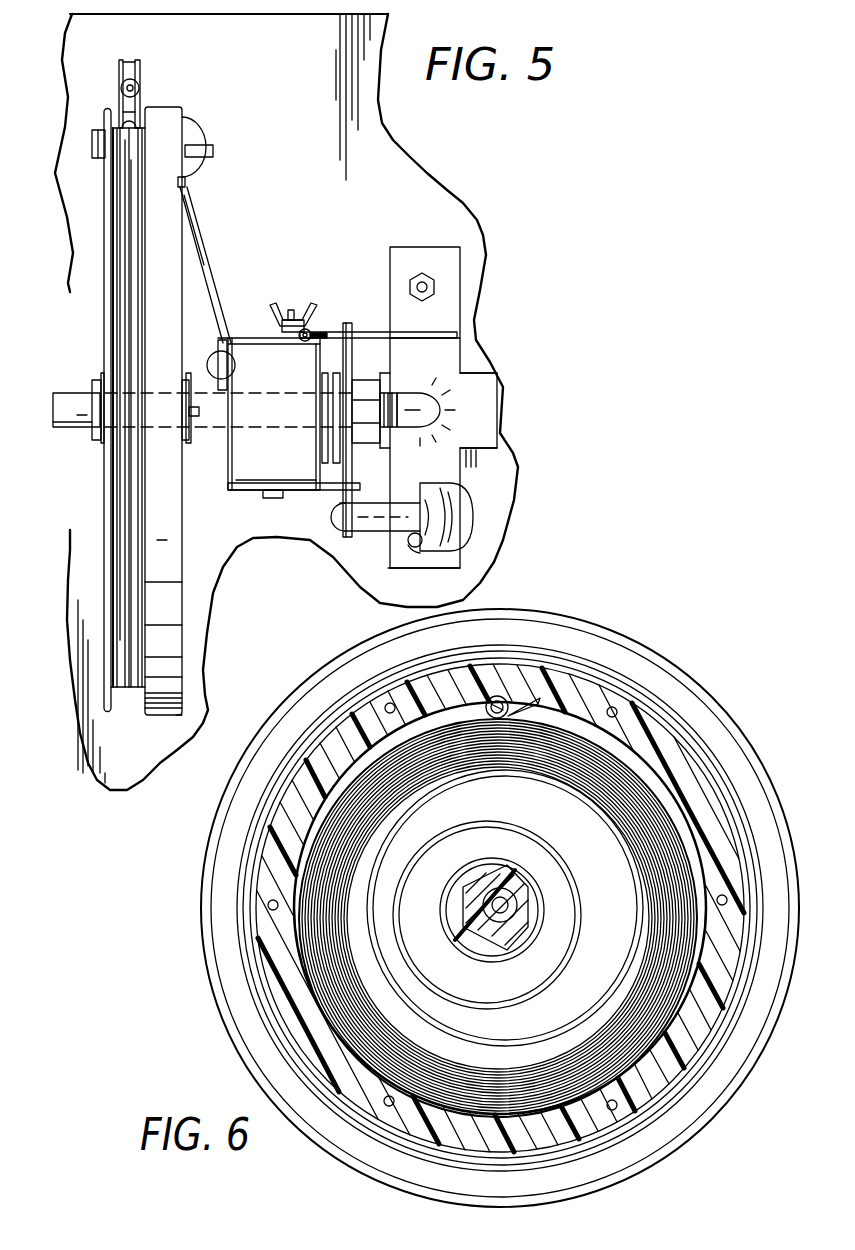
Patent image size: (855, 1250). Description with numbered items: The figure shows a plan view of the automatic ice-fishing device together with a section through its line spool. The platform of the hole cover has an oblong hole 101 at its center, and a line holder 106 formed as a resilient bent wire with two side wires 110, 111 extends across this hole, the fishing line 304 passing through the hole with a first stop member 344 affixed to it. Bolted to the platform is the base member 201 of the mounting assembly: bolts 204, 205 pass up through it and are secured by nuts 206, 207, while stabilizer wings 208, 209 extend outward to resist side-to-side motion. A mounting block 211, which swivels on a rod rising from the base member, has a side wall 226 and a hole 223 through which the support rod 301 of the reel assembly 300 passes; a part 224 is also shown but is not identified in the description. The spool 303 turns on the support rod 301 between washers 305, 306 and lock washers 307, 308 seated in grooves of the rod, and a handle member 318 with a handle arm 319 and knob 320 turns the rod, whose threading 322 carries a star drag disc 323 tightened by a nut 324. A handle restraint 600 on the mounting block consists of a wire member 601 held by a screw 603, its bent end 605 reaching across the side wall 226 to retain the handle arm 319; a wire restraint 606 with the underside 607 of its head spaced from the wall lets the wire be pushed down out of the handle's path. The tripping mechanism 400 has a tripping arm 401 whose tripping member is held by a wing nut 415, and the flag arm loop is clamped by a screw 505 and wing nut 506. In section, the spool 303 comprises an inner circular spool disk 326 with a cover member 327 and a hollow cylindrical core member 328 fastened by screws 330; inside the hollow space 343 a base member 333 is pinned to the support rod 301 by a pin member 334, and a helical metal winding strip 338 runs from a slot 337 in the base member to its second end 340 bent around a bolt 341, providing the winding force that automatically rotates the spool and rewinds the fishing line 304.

In FIG. 5, the hole 101 is at (142, 70).
In FIG. 5, the line holder 106 is at (155, 52).
In FIG. 5, the side wire 110 is at (118, 58).
In FIG. 5, the side wire 111 is at (136, 87).
In FIG. 5, the base member 201 is at (440, 317).
In FIG. 5, the bolt 204 is at (430, 288).
In FIG. 5, the bolt 205 is at (470, 567).
In FIG. 5, the nut 206 is at (437, 280).
In FIG. 5, the nut 207 is at (414, 548).
In FIG. 5, the stabilizer wing 208 is at (487, 392).
In FIG. 5, the stabilizer wing 209 is at (395, 385).
In FIG. 5, the mounting block 211 is at (237, 337).
In FIG. 5, the hole 223 is at (357, 365).
In FIG. 5, the arm 224 is at (302, 378).
In FIG. 5, the side wall 226 is at (257, 553).
In FIG. 5, the reel assembly 300 is at (97, 455).
In FIG. 5, the support rod 301 is at (73, 417).
In FIG. 6, the support rod 301 is at (490, 862).
In FIG. 5, the spool 303 is at (195, 85).
In FIG. 6, the spool 303 is at (757, 1072).
In FIG. 6, the fishing line 304 is at (248, 870).
In FIG. 5, the washer 305 is at (102, 373).
In FIG. 5, the washer 306 is at (185, 383).
In FIG. 5, the first lock washer 307 is at (58, 455).
In FIG. 5, the second lock washer 308 is at (182, 383).
In FIG. 5, the handle member 318 is at (480, 500).
In FIG. 5, the handle arm 319 is at (347, 528).
In FIG. 5, the knob 320 is at (458, 520).
In FIG. 5, the threading 322 is at (378, 390).
In FIG. 5, the star drag disc 323 is at (347, 325).
In FIG. 5, the nut 324 is at (420, 437).
In FIG. 6, the inner circular spool disk 326 is at (663, 738).
In FIG. 5, the cover member 327 is at (176, 718).
In FIG. 6, the cover member 327 is at (712, 765).
In FIG. 6, the hollow cylindrical core member 328 is at (705, 732).
In FIG. 6, the screws 330 is at (267, 907).
In FIG. 6, the base member 333 is at (473, 933).
In FIG. 6, the pin member 334 is at (497, 933).
In FIG. 6, the slot 337 is at (520, 920).
In FIG. 6, the helical metal winding strip 338 is at (587, 903).
In FIG. 6, the second end 340 is at (540, 704).
In FIG. 6, the bolt 341 is at (500, 696).
In FIG. 6, the hollow space 343 is at (318, 816).
In FIG. 5, the first stop member 344 is at (120, 92).
In FIG. 5, the tripping mechanism 400 is at (220, 255).
In FIG. 5, the tripping arm 401 is at (209, 280).
In FIG. 5, the wing nut 415 is at (200, 123).
In FIG. 5, the screw 505 is at (286, 318).
In FIG. 5, the wing nut 506 is at (275, 305).
In FIG. 5, the handle restraint 600 is at (223, 490).
In FIG. 5, the wire member 601 is at (318, 490).
In FIG. 5, the screw 603 is at (233, 367).
In FIG. 5, the end 605 is at (357, 490).
In FIG. 5, the wire restraint 606 is at (267, 500).
In FIG. 5, the underside 607 is at (287, 485).